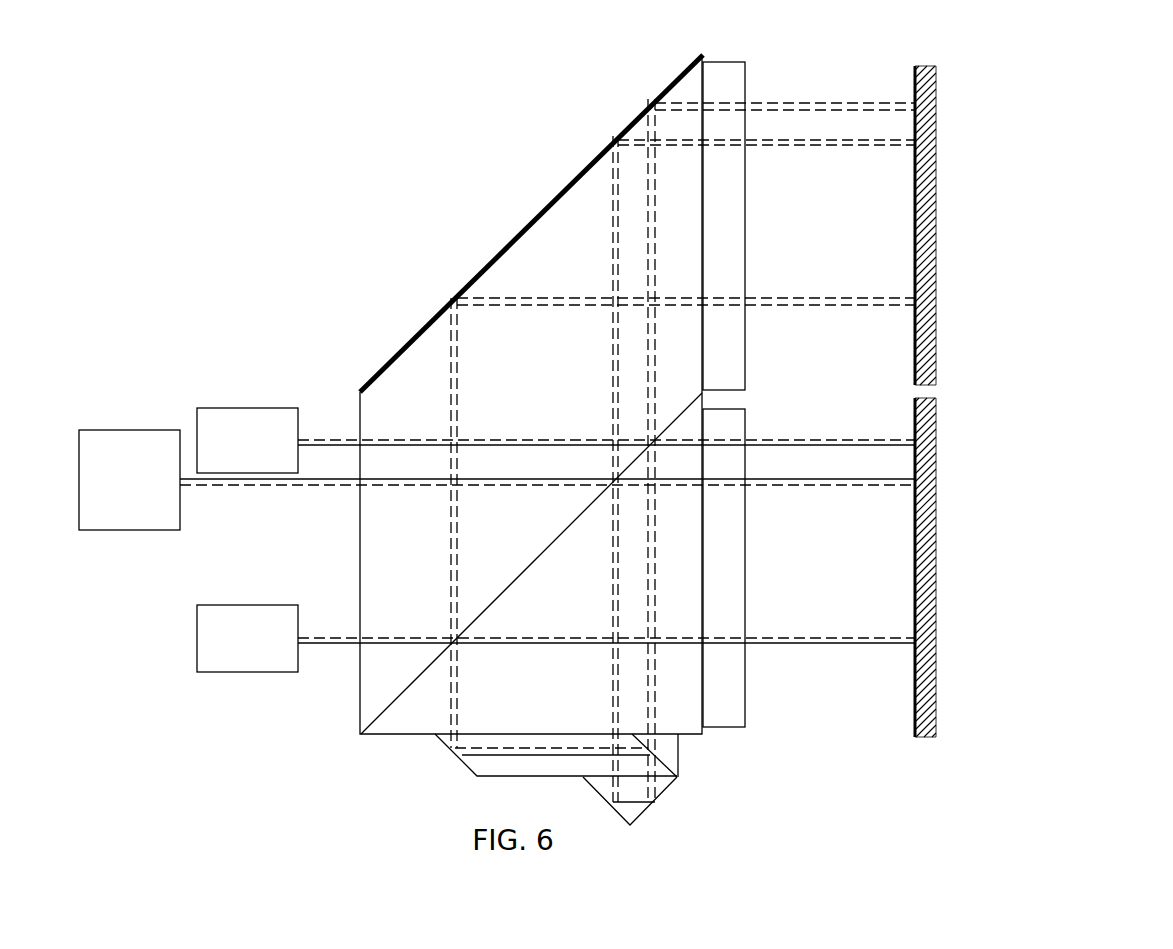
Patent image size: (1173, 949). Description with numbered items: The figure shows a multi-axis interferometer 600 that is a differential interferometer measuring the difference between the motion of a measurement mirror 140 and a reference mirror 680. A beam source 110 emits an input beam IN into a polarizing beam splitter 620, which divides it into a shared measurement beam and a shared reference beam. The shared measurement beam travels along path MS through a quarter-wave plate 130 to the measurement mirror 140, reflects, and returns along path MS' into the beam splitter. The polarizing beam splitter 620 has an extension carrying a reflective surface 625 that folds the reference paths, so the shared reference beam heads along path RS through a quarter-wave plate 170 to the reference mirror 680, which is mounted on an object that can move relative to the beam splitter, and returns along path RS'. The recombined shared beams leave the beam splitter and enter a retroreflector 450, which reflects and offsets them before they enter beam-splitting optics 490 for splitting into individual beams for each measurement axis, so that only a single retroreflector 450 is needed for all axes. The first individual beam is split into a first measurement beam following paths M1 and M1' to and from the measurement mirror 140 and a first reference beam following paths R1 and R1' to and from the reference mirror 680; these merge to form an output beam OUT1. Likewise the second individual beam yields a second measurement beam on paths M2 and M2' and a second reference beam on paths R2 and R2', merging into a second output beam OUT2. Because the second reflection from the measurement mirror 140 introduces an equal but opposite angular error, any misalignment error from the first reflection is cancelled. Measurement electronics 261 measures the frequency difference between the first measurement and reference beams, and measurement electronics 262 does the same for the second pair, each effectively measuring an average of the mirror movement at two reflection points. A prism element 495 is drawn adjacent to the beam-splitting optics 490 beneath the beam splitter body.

The multi-axis interferometer 600 is at (342, 199).
The polarizing beam splitter 620 is at (556, 702).
The reflective surface 625 is at (380, 370).
The quarter-wave plate 170 is at (747, 170).
The quarter-wave plate 130 is at (727, 728).
The reference mirror 680 is at (913, 270).
The measurement mirror 140 is at (917, 417).
The beam source 110 is at (113, 519).
The measurement electronics 261 is at (231, 467).
The measurement electronics 262 is at (231, 664).
The beam-splitting optics 490 is at (530, 777).
The prism 495 is at (677, 767).
The retroreflector 450 is at (668, 788).
The input beam IN is at (547, 495).
The output beam OUT1 is at (606, 429).
The second output beam OUT2 is at (606, 654).
The path RS is at (532, 523).
The path RS' is at (686, 523).
The path R1 is at (743, 469).
The path R1' is at (764, 450).
The path R2 is at (521, 629).
The path R2' is at (551, 632).
The path M1 is at (811, 428).
The path M1' is at (806, 411).
The path MS is at (809, 466).
The path MS' is at (812, 500).
The path M2 is at (811, 625).
The path M2' is at (813, 658).